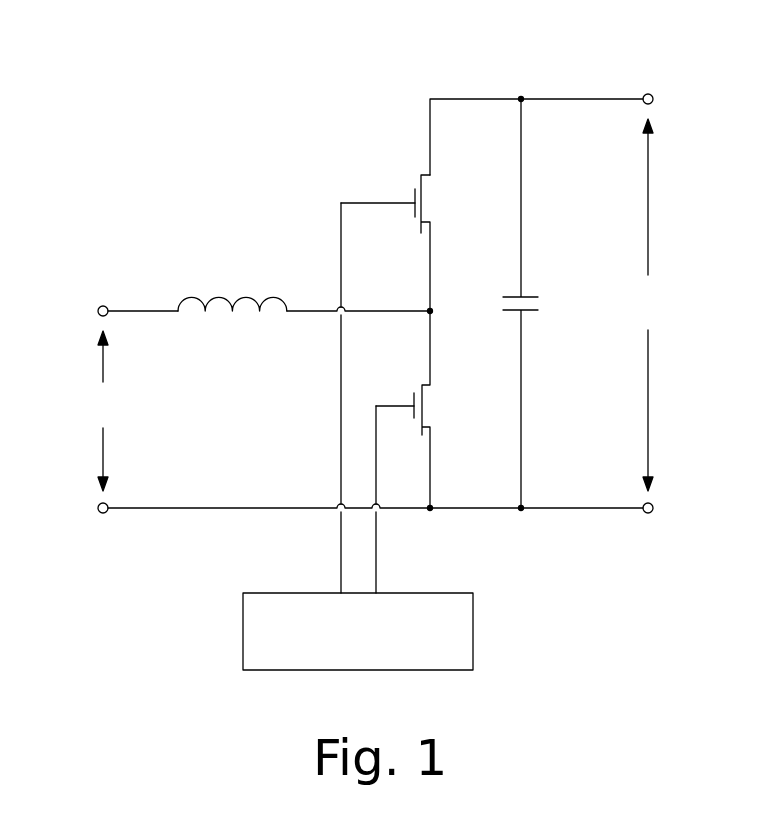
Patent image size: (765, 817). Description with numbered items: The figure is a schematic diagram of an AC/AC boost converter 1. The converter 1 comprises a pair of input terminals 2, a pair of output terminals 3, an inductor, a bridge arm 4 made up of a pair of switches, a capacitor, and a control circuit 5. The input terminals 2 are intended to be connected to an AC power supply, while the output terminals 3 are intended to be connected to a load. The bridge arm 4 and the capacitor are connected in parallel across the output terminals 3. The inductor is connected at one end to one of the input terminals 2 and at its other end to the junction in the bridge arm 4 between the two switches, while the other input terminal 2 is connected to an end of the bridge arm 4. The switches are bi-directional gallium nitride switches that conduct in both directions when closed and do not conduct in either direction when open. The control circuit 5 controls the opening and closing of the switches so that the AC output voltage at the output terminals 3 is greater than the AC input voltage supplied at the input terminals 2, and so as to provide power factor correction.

The AC/AC boost converter 1 is at (190, 150).
The input terminals 2 is at (103, 305).
The output terminals 3 is at (648, 93).
The bridge arm 4 is at (428, 127).
The control circuit 5 is at (243, 633).